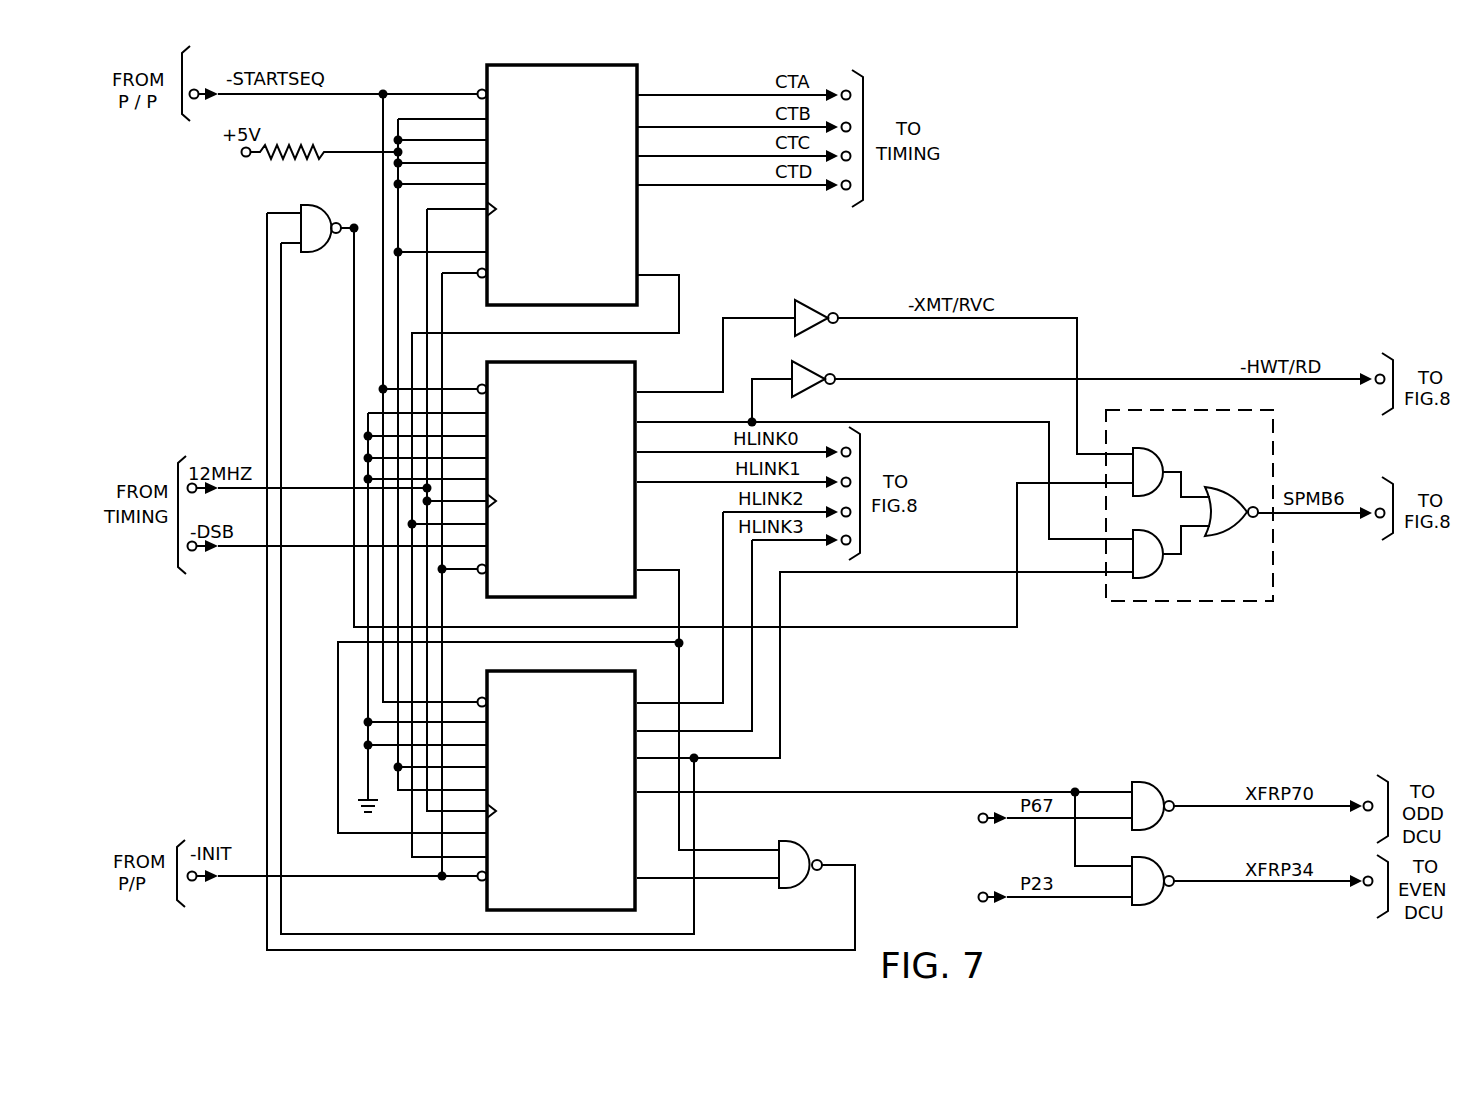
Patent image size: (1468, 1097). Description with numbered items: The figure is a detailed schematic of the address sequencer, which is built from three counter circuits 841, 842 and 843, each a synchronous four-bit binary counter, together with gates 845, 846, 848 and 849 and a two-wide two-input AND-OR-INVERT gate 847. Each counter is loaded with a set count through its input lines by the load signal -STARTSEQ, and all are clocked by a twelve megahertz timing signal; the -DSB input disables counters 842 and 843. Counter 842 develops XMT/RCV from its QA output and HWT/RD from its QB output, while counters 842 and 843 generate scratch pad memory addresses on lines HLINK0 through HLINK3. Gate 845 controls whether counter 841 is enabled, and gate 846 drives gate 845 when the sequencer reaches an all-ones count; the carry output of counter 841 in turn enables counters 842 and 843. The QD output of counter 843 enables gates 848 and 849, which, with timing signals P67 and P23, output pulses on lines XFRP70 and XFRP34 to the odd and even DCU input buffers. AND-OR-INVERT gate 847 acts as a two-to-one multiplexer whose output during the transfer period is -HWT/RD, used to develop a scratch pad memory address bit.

The counter circuit 841 is at (638, 232).
The counter circuit 842 is at (637, 364).
The counter circuit 843 is at (487, 912).
The gate 845 is at (327, 186).
The gate 846 is at (795, 841).
The 2 wide 2 input AND-OR-INVERT gate 847 is at (1273, 452).
The gate 848 is at (1148, 782).
The gate 849 is at (1148, 857).